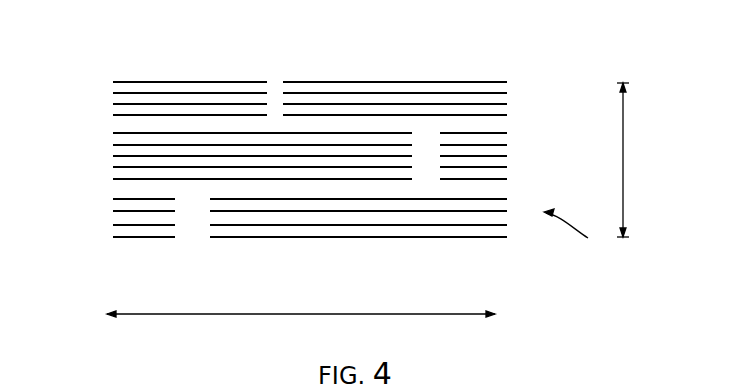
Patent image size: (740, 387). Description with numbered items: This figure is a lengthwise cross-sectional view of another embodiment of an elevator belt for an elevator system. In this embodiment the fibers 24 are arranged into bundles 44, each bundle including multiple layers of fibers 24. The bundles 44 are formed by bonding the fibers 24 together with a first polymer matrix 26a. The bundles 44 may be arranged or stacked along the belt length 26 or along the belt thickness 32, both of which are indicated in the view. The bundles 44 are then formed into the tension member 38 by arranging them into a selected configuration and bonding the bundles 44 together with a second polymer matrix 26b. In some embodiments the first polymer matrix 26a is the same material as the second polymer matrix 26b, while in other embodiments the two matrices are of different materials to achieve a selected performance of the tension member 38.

The fibers 24 is at (126, 82).
The belt length 26 is at (245, 315).
The first polymer matrix 26a is at (188, 85).
The second polymer matrix 26b is at (138, 126).
The belt thickness 32 is at (623, 148).
The tension member 38 is at (572, 233).
The bundles 44 is at (221, 82).